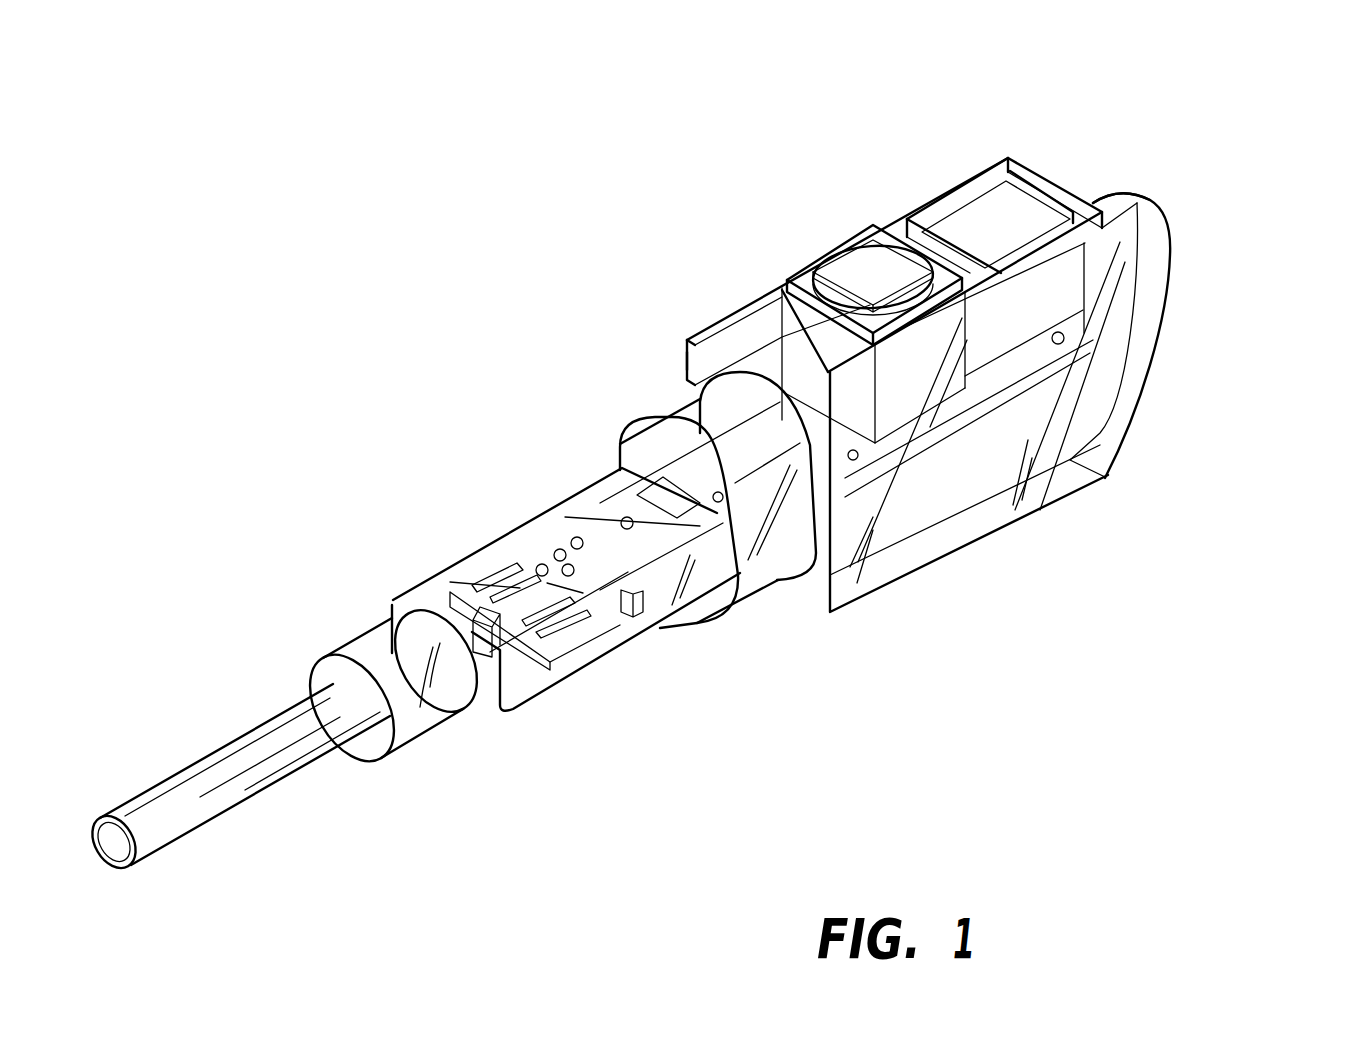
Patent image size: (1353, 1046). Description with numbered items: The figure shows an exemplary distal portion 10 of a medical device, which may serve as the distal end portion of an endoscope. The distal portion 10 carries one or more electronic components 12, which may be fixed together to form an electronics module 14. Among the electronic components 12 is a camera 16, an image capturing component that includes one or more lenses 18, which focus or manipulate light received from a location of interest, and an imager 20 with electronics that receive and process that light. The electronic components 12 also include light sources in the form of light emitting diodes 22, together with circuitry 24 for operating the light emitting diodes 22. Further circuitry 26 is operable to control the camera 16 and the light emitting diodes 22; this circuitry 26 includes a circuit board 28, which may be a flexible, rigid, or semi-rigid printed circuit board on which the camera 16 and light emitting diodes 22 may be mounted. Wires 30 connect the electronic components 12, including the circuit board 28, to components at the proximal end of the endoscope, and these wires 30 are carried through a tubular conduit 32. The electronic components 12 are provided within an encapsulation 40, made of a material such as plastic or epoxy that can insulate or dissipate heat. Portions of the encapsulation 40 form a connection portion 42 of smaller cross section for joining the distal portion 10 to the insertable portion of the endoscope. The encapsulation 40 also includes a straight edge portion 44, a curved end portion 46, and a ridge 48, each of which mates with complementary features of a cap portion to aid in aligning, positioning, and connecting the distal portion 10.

The distal portion 10 is at (1236, 333).
The electronic components 12 is at (893, 178).
The electronics module 14 is at (775, 665).
The camera 16 is at (902, 380).
The lenses 18 is at (933, 305).
The imager 20 is at (903, 437).
The light emitting diodes 22 is at (956, 238).
The circuitry for operating LEDs 24 is at (1030, 318).
The circuitry 26 is at (550, 518).
The circuit board 28 is at (622, 589).
The wires 30 is at (497, 612).
The conduit 32 is at (260, 753).
The encapsulation 40 is at (735, 347).
The connection portion 42 is at (527, 452).
The straight edge portion 44 is at (1047, 177).
The curved end portion 46 is at (1142, 197).
The ridge 48 is at (687, 356).